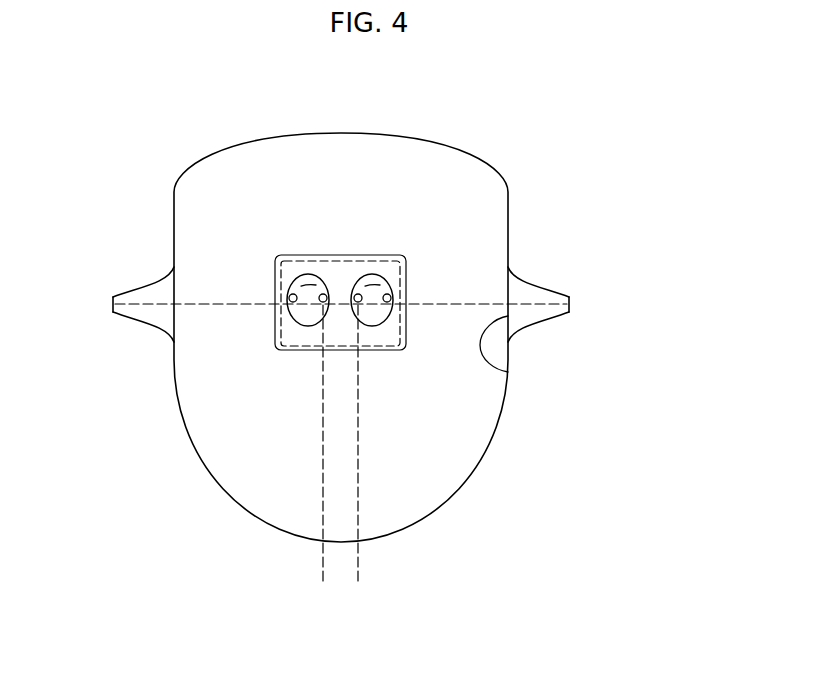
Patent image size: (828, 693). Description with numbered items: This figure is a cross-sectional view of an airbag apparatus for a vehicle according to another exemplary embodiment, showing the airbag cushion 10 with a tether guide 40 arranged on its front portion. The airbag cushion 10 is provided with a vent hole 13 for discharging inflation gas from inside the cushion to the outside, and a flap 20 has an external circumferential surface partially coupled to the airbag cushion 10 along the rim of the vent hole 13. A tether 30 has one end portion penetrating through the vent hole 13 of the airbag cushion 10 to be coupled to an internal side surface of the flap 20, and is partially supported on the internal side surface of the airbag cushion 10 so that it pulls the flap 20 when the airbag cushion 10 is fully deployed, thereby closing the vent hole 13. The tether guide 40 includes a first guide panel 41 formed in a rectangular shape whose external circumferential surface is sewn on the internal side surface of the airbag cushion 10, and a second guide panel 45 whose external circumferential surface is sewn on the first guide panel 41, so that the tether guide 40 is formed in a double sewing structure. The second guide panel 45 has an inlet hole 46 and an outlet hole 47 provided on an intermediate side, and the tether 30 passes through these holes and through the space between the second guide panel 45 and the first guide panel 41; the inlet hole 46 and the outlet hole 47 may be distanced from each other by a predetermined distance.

The airbag cushion 10 is at (445, 482).
The vent hole 13 is at (508, 372).
The flap 20 is at (540, 287).
The tether 30 is at (323, 507).
The tether guide 40 is at (331, 242).
The first guide panel 41 is at (351, 268).
The second guide panel 45 is at (297, 278).
The inlet hole 46 is at (359, 300).
The outlet hole 47 is at (390, 293).